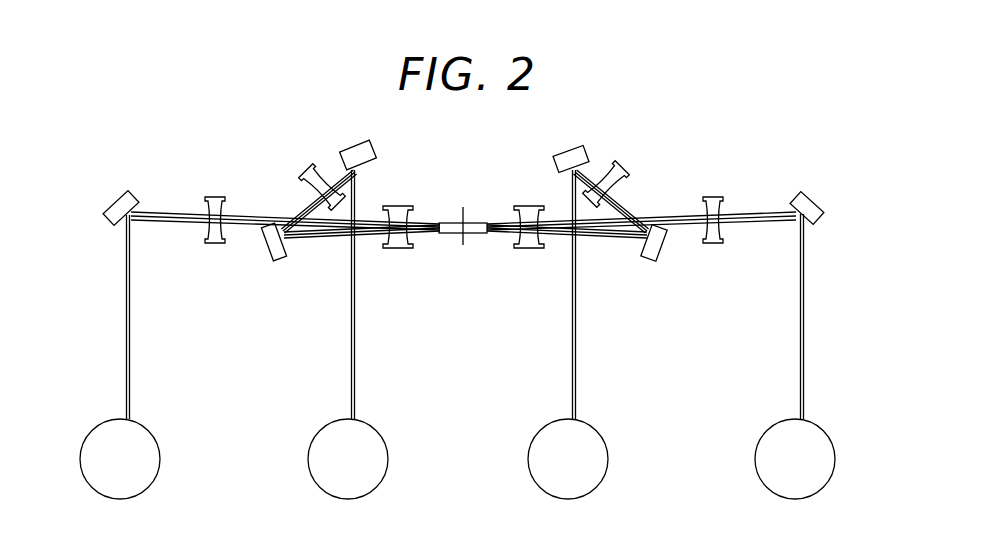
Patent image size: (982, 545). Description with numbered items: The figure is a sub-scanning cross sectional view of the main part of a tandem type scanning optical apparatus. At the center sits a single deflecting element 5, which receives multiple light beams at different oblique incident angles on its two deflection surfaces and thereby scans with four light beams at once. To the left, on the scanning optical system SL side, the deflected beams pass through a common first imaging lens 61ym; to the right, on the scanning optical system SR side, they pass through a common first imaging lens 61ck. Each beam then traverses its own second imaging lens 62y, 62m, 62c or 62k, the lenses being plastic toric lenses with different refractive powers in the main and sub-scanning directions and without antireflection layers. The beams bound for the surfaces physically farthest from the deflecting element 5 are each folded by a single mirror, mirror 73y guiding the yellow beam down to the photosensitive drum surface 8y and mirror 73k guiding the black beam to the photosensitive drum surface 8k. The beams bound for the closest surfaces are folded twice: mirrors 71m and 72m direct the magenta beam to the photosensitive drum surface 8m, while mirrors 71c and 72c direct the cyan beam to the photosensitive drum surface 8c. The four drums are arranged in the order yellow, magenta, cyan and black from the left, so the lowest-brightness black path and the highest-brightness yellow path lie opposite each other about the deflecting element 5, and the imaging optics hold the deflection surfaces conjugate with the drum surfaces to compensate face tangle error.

The deflecting element 5 is at (466, 208).
The first imaging lens 61ym is at (397, 248).
The first imaging lens 61ck is at (530, 248).
The second imaging lens 62y is at (215, 243).
The second imaging lens 62m is at (307, 171).
The second imaging lens 62c is at (622, 171).
The second imaging lens 62k is at (713, 243).
The reflecting mirror 71m is at (278, 260).
The reflecting mirror 71c is at (651, 260).
The reflecting mirror 72m is at (386, 135).
The reflecting mirror 72c is at (558, 150).
The reflecting mirror 73y is at (110, 222).
The reflecting mirror 73k is at (818, 222).
The photosensitive drum surface 8y is at (140, 425).
The photosensitive drum surface 8m is at (365, 424).
The photosensitive drum surface 8c is at (586, 424).
The photosensitive drum surface 8k is at (813, 424).